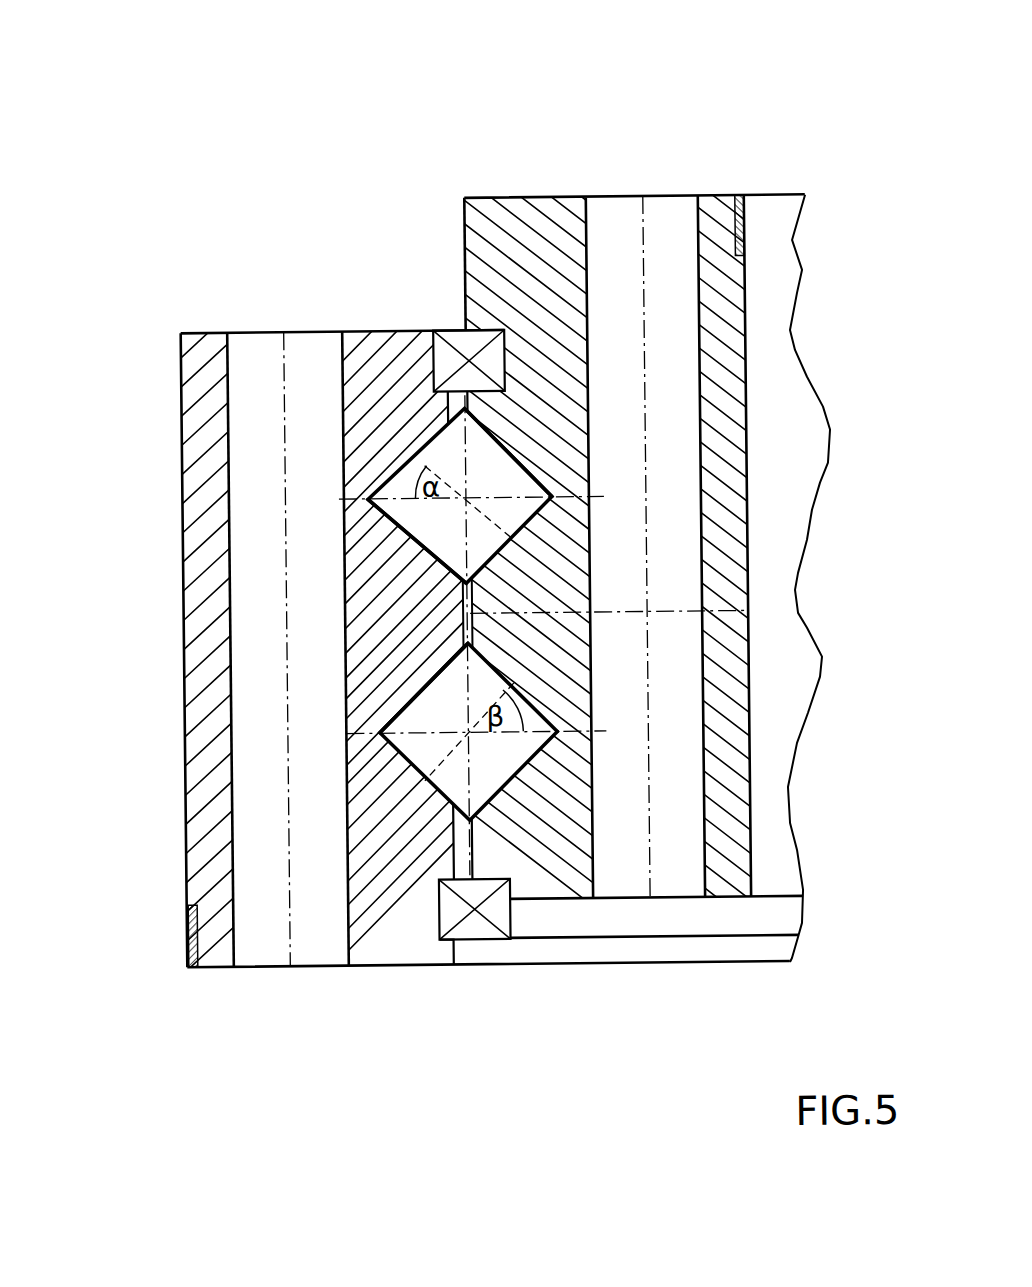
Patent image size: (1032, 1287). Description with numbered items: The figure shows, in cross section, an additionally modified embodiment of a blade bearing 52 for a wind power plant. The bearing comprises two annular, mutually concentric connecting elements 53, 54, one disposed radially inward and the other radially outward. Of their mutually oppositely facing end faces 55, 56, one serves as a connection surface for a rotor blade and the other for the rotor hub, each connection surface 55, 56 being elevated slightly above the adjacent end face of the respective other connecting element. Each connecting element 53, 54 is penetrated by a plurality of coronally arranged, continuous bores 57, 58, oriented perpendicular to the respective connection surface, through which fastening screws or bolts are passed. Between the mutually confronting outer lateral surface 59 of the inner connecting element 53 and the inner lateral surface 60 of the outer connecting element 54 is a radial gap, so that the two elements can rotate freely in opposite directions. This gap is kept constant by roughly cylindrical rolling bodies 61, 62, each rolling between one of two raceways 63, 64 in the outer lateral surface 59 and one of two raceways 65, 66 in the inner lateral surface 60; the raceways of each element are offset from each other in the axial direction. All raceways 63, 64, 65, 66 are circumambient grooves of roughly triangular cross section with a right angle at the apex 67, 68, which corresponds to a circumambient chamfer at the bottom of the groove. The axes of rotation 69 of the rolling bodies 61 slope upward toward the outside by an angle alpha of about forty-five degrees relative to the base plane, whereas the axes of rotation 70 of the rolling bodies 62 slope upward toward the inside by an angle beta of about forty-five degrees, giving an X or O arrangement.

The blade bearing 52 is at (254, 212).
The connecting element 53 is at (552, 183).
The connecting element 54 is at (204, 315).
The end face 55 is at (720, 199).
The end face 56 is at (206, 965).
The bore 57 is at (702, 255).
The bore 58 is at (228, 931).
The outer lateral surface 59 is at (469, 242).
The inner lateral surface 60 is at (452, 946).
The rolling body 61 is at (450, 442).
The rolling body 62 is at (345, 800).
The raceway 63 is at (514, 458).
The raceway 64 is at (498, 775).
The raceway 65 is at (405, 524).
The raceway 66 is at (413, 692).
The apex 67 is at (556, 732).
The apex 68 is at (378, 732).
The axis of rotation 69 is at (434, 442).
The axis of rotation 70 is at (420, 790).